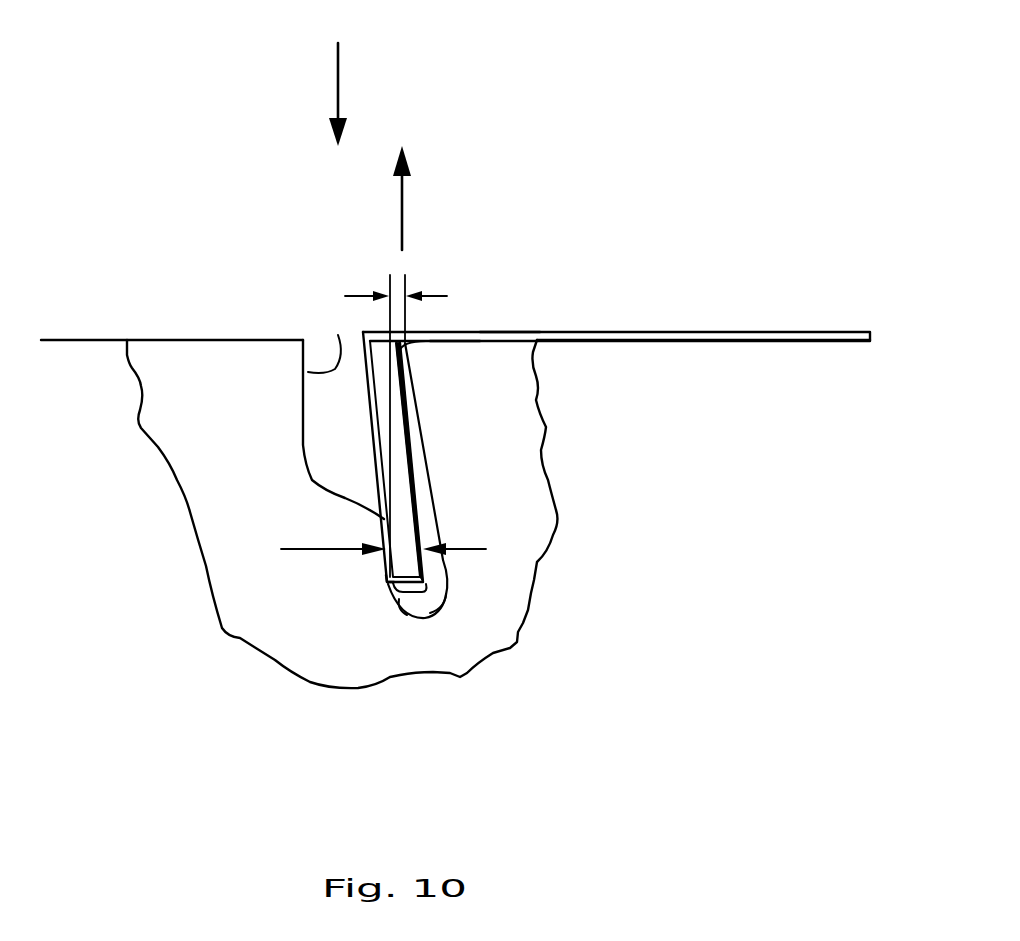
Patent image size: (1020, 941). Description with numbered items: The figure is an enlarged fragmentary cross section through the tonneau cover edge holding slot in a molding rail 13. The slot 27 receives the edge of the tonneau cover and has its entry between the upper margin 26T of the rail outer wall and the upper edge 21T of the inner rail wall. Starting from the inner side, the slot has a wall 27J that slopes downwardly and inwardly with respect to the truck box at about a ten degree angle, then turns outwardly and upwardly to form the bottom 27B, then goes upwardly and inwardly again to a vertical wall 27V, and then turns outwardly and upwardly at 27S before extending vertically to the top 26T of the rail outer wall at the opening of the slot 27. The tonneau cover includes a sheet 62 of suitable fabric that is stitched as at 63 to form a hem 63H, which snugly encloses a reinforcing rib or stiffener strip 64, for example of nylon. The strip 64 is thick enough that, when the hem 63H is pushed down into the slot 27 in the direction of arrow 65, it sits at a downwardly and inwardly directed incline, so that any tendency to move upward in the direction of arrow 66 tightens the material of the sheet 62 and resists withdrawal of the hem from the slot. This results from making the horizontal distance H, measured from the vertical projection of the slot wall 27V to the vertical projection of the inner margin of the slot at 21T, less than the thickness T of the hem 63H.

The body 13 is at (225, 313).
The upper margin of wall 26T is at (280, 340).
The slot 27 is at (330, 297).
The outward turn of slot wall 27S is at (338, 335).
The sloping slot wall 27J is at (433, 521).
The slot bottom 27B is at (448, 592).
The vertical slot wall 27V is at (383, 569).
The sheet 62 is at (651, 333).
The stitching 63 is at (508, 338).
The hem 63H is at (406, 616).
The stiffener strip 64 is at (394, 532).
The arrow 65 is at (335, 81).
The arrow 66 is at (407, 200).
The upper edge of wall 21T is at (448, 352).
The horizontal distance H is at (407, 307).
The hem thickness T is at (371, 552).